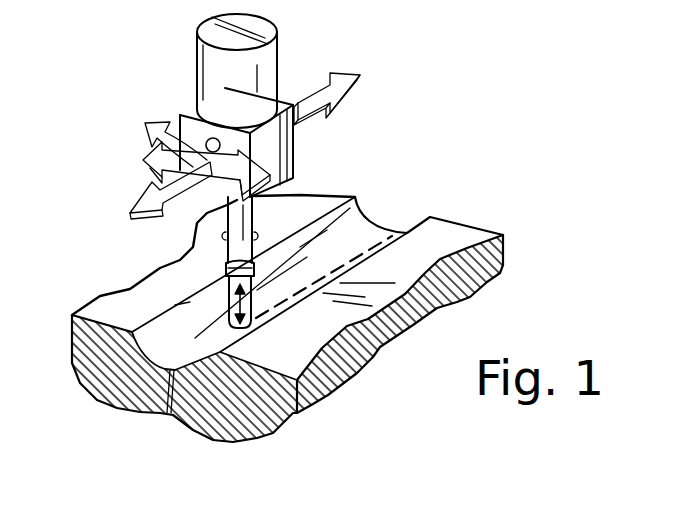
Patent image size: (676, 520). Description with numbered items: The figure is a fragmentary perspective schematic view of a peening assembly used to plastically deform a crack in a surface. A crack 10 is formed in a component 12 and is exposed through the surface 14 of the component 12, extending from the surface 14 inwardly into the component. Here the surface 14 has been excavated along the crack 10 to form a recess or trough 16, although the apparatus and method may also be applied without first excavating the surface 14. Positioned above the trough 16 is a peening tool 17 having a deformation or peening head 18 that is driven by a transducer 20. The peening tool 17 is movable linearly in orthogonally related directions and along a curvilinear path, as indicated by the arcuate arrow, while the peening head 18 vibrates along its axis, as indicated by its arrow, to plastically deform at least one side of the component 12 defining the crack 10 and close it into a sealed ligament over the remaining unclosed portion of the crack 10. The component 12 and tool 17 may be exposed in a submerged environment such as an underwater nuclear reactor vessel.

The crack 10 is at (165, 424).
The component 12 is at (97, 375).
The surface 14 is at (103, 303).
The recess or trough 16 is at (360, 222).
The peening tool 17 is at (289, 138).
The peening head 18 is at (200, 262).
The transducer 20 is at (212, 68).